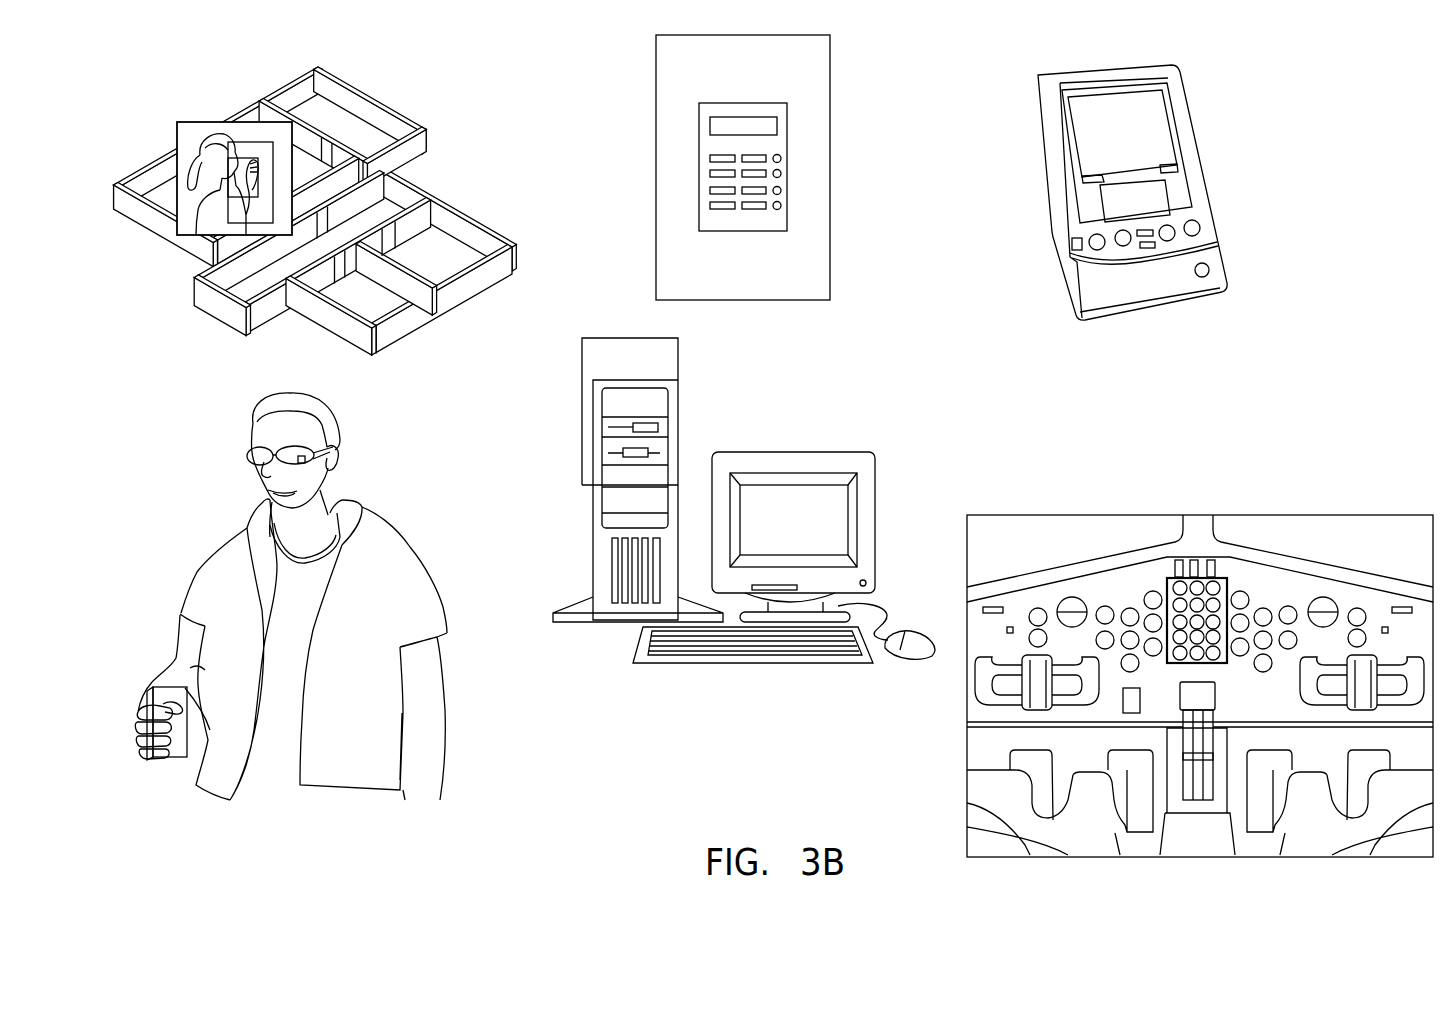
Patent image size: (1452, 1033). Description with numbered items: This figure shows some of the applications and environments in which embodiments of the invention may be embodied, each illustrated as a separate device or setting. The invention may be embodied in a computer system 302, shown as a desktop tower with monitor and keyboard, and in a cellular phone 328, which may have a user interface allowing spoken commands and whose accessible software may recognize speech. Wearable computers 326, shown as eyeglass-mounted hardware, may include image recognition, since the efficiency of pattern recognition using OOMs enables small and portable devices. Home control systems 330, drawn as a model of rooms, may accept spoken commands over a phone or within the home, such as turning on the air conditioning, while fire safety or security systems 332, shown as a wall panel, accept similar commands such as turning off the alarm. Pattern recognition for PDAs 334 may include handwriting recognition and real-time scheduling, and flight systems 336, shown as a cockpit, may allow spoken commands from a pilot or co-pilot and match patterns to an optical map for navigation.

The computer system 302 is at (797, 450).
The wearable computers 326 is at (333, 443).
The cellular phone 328 is at (150, 686).
The home control systems 330 is at (373, 96).
The fire safety or security systems 332 is at (830, 167).
The PDAs 334 is at (1196, 152).
The flight systems 336 is at (1322, 513).